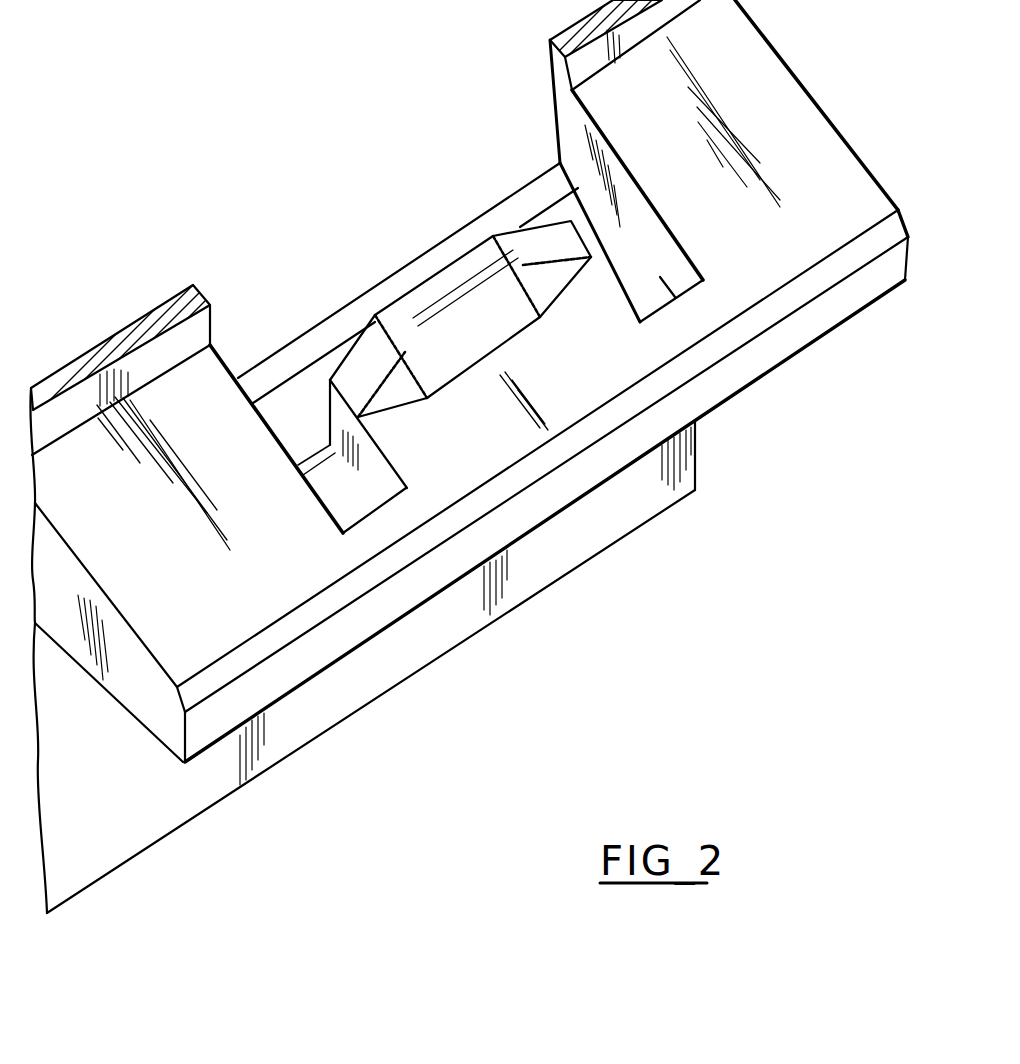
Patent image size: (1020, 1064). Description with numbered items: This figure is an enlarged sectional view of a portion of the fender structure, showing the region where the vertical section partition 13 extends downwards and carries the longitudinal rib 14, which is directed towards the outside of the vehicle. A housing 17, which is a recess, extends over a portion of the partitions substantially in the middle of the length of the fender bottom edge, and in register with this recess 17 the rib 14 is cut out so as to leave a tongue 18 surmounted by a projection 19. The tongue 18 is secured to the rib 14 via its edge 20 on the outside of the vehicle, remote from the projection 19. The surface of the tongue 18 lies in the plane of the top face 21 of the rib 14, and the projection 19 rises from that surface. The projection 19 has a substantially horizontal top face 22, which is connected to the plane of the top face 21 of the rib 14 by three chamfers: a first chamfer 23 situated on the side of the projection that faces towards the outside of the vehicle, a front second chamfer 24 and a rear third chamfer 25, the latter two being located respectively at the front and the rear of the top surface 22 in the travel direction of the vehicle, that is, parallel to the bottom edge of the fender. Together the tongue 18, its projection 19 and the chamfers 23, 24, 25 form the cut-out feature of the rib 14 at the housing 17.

The vertical section partition 13 is at (128, 338).
The longitudinal rib 14 is at (122, 673).
The housing 17 is at (444, 362).
The tongue 18 is at (503, 405).
The projection 19 is at (403, 390).
The edge 20 is at (582, 361).
The top face 21 is at (224, 618).
The top face 22 is at (475, 260).
The first chamfer 23 is at (455, 340).
The front second chamfer 24 is at (368, 352).
The rear third chamfer 25 is at (542, 235).